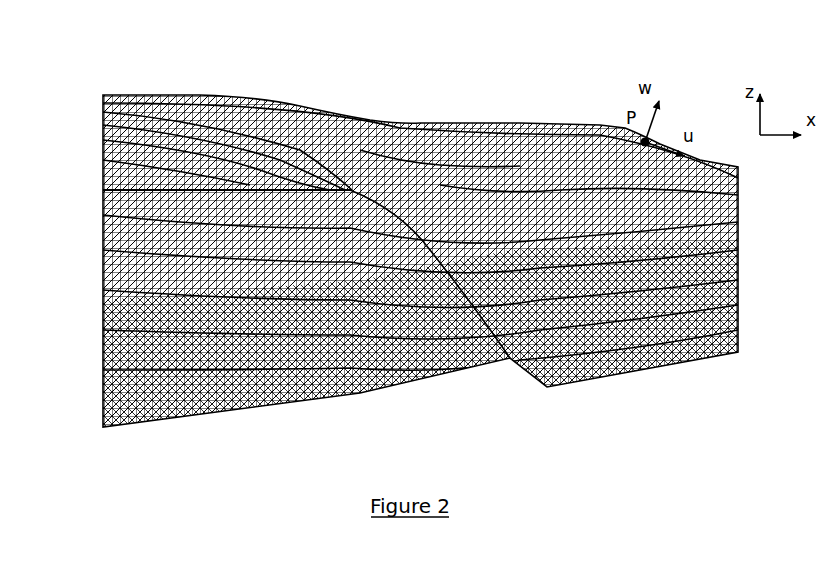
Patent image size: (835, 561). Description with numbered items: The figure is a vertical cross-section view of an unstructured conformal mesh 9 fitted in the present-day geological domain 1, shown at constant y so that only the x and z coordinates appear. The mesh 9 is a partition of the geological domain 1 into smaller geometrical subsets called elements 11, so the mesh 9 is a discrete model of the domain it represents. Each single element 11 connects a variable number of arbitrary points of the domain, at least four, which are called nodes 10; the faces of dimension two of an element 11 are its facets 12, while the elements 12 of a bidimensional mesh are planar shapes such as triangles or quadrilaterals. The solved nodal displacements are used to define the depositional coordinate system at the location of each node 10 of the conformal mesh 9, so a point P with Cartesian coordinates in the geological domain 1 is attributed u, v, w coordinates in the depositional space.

The geological domain 1 is at (196, 90).
The mesh 9 is at (110, 141).
The node 10 is at (404, 123).
The element 11 is at (472, 123).
The facet 12 is at (101, 188).